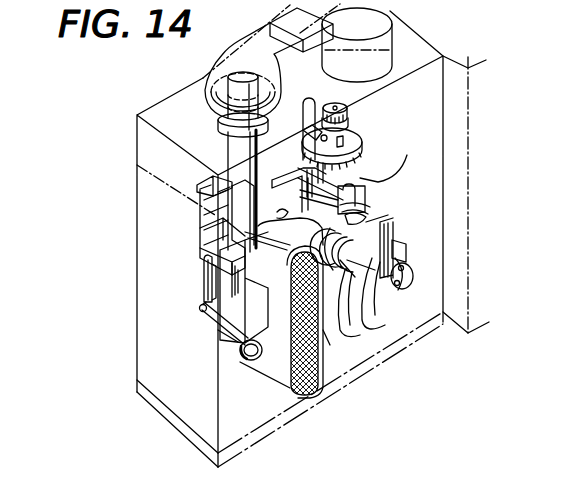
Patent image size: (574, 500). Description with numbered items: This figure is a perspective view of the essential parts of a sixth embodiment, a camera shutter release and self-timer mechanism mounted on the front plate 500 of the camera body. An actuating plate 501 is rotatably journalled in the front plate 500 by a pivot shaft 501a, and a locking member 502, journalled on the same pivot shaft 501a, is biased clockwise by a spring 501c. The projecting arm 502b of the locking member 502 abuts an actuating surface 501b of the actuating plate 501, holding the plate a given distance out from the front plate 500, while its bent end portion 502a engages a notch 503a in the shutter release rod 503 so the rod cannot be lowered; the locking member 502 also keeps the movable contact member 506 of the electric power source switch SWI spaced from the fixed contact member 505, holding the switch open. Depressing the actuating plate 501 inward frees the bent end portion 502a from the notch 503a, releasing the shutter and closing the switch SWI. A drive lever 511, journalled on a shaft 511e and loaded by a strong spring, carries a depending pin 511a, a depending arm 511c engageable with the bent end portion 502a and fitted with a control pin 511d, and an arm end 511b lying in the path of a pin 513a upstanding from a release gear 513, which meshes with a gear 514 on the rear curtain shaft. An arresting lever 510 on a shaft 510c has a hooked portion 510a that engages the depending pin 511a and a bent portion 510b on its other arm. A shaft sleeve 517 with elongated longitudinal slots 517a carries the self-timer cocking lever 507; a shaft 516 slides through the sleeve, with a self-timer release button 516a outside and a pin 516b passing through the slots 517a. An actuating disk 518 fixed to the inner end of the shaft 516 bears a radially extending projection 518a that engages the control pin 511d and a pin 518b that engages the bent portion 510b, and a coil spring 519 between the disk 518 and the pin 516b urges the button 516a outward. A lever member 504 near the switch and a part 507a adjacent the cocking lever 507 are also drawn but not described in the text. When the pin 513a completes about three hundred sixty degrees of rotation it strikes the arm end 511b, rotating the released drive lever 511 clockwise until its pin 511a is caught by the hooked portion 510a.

The front plate 500 is at (255, 425).
The actuating plate 501 is at (276, 371).
The pivot shaft 501a is at (280, 370).
The actuating surface 501b is at (219, 253).
The spring 501c is at (220, 336).
The locking member 502 is at (202, 180).
The bent end portion 502a is at (212, 176).
The projecting arm 502b is at (213, 222).
The shutter release rod 503 is at (228, 122).
The notch 503a is at (305, 134).
The lever 504 is at (199, 309).
The fixed contact member 505 is at (202, 276).
The movable contact member 506 is at (203, 289).
The electric power source switch SWI is at (196, 319).
The self-timer cocking lever 507 is at (408, 274).
The cam bracket 507a is at (388, 248).
The arresting lever 510 is at (395, 162).
The hooked portion 510a is at (372, 182).
The bent portion 510b is at (345, 345).
The shaft 510c is at (353, 198).
The drive lever 511 is at (312, 168).
The depending pin 511a is at (369, 167).
The arm end 511b is at (306, 120).
The depending arm 511c is at (313, 310).
The control pin 511d is at (347, 275).
The shaft 511e is at (215, 203).
The release gear 513 is at (348, 134).
The pin 513a is at (346, 113).
The gear 514 is at (347, 101).
The shaft 516 is at (379, 312).
The self-timer release button 516a is at (393, 292).
The pin 516b is at (363, 303).
The shaft sleeve 517 is at (392, 231).
The elongated longitudinal slots 517a is at (363, 301).
The actuating disk 518 is at (367, 212).
The radially extending projection 518a is at (387, 208).
The pin 518b is at (388, 224).
The coil spring 519 is at (363, 298).